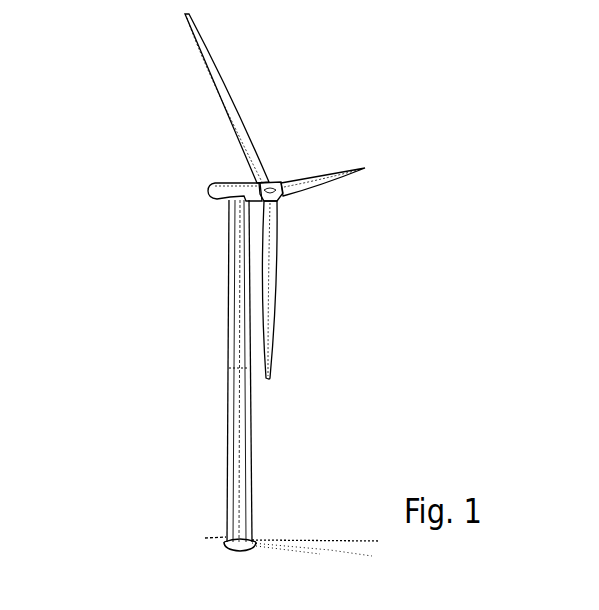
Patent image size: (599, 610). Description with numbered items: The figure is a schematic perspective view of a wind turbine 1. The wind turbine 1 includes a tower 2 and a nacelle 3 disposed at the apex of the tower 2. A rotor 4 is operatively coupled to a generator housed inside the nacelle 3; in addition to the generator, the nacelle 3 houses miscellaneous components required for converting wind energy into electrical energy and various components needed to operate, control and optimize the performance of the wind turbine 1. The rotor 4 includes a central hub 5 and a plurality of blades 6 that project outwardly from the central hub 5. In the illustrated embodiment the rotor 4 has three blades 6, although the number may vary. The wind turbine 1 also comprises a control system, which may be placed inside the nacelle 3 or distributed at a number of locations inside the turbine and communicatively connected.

The wind turbine 1 is at (96, 150).
The tower 2 is at (236, 318).
The nacelle 3 is at (222, 180).
The rotor 4 is at (348, 265).
The central hub 5 is at (278, 179).
The blades 6 is at (232, 107).